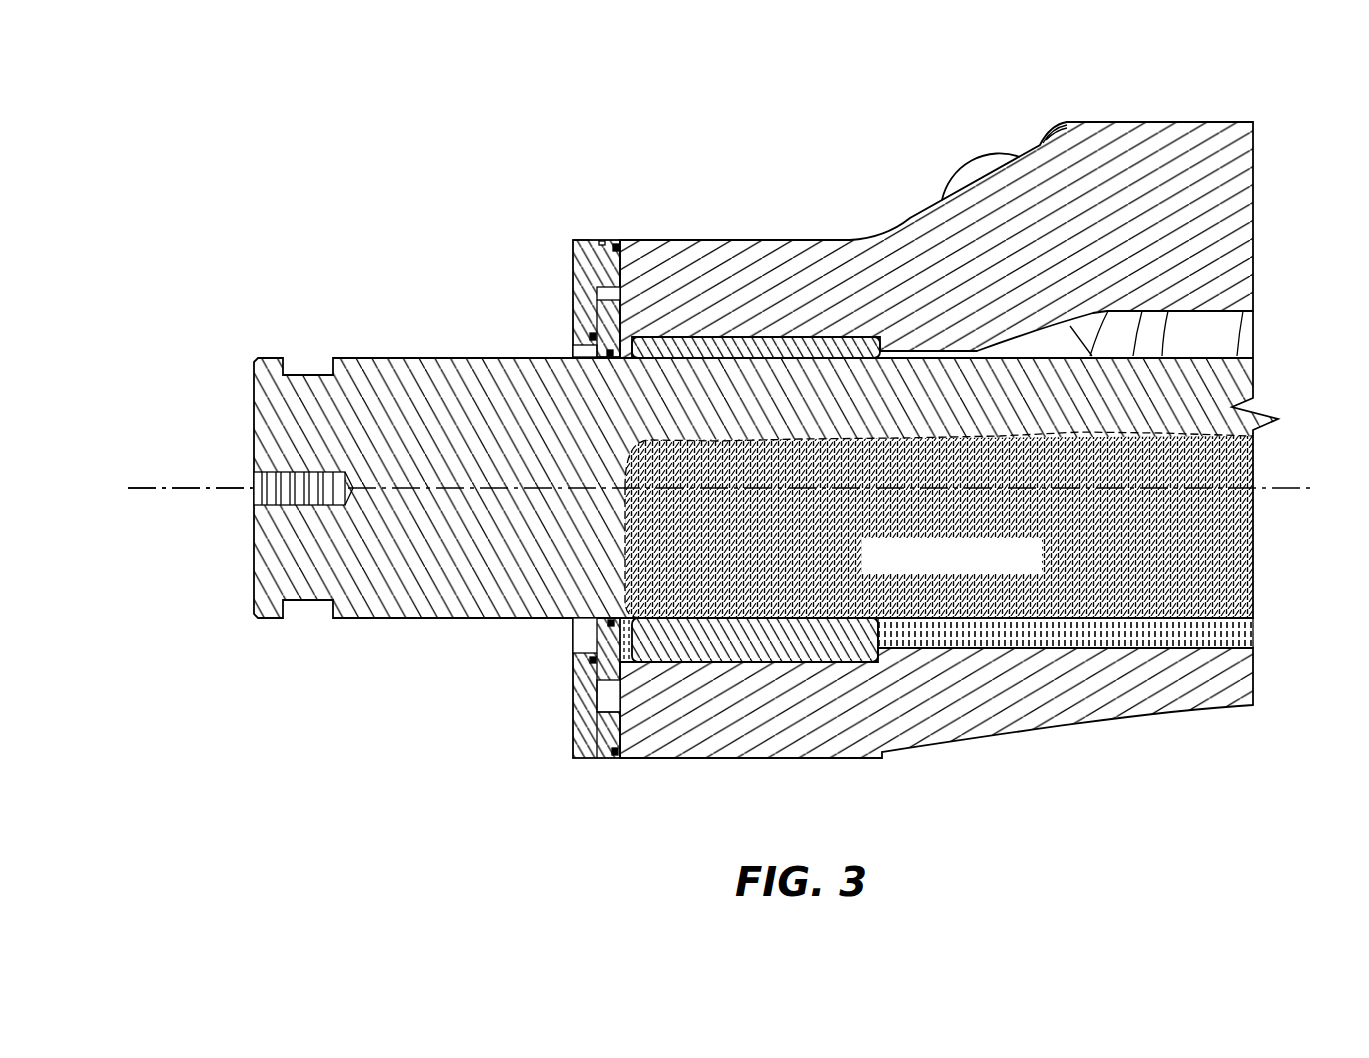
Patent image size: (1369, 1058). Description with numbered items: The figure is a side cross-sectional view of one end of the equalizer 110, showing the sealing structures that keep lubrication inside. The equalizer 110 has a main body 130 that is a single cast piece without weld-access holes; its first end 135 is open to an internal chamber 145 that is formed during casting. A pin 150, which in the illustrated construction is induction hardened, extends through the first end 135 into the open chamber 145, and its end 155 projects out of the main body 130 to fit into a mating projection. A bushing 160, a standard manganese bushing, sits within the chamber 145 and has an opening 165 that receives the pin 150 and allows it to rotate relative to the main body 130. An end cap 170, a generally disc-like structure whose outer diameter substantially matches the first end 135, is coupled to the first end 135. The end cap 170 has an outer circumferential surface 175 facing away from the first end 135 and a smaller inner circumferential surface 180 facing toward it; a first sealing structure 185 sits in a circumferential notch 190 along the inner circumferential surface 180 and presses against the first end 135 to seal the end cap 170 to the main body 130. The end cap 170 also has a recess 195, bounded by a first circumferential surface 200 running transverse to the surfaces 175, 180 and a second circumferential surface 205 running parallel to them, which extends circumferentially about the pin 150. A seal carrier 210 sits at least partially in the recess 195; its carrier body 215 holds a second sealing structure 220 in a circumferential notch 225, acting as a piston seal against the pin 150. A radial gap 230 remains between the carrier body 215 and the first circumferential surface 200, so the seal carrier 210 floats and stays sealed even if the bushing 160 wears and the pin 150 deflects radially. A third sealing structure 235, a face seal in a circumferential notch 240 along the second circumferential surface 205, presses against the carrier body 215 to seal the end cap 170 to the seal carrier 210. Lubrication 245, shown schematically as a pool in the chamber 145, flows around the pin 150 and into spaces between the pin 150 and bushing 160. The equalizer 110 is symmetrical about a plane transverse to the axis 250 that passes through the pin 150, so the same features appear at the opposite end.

The equalizer 110 is at (408, 158).
The main body 130 is at (1128, 176).
The first end 135 is at (765, 270).
The internal chamber 145 is at (1205, 333).
The pin 150 is at (313, 419).
The end 155 is at (270, 568).
The bushing 160 is at (832, 642).
The opening 165 is at (818, 337).
The end cap 170 is at (566, 740).
The outer circumferential surface 175 is at (573, 275).
The inner circumferential surface 180 is at (618, 246).
The first sealing structure 185 is at (602, 243).
The circumferential notch 190 is at (576, 243).
The recess 195 is at (617, 754).
The first circumferential surface 200 is at (604, 716).
The second circumferential surface 205 is at (603, 690).
The seal carrier 210 is at (628, 655).
The carrier body 215 is at (613, 349).
The second sealing structure 220 is at (606, 626).
The circumferential notch 225 is at (575, 658).
The radial gap 230 is at (608, 684).
The third sealing structure 235 is at (597, 323).
The circumferential notch 240 is at (590, 338).
The lubrication 245 is at (1213, 638).
The axis 250 is at (187, 490).